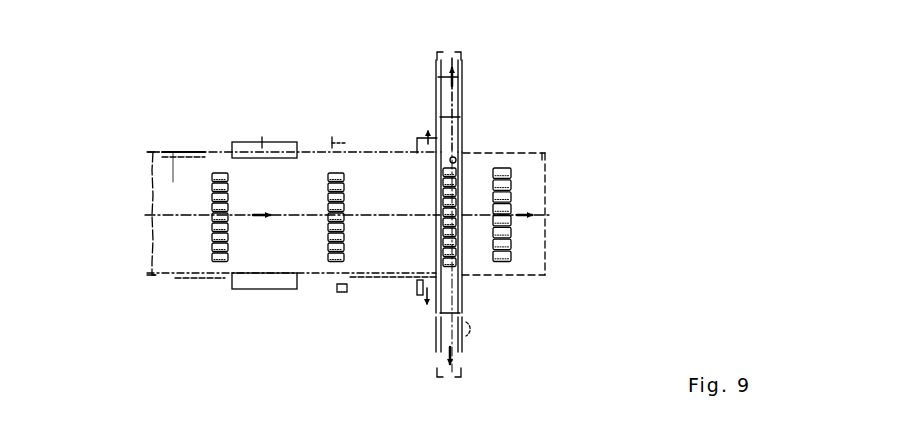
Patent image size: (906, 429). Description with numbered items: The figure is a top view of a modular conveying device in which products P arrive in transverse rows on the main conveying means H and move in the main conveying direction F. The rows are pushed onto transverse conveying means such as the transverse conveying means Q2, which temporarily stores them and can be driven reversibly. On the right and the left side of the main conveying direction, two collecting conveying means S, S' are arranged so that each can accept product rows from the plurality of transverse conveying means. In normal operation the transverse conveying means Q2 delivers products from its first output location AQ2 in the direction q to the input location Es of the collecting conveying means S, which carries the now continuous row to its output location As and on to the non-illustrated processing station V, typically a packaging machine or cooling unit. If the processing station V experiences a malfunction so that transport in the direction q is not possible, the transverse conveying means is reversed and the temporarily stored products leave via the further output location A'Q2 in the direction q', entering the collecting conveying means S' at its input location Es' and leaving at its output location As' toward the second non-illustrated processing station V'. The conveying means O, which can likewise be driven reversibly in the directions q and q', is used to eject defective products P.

The main conveying means H is at (187, 170).
The products P is at (220, 172).
The main conveying direction F is at (394, 202).
The processing station V is at (347, 237).
The processing station V' is at (447, 83).
The collecting conveying means S is at (411, 264).
The collecting conveying means S' is at (477, 102).
The input location of collecting conveying means S' Es' is at (418, 74).
The conveying direction q' is at (445, 105).
The output location of collecting conveying means S' As' is at (488, 122).
The further output location of transverse conveying means Q2 A'Q2 is at (498, 146).
The transverse conveying means Q2 is at (447, 163).
The conveying means O is at (420, 283).
The conveying direction q is at (428, 330).
The input location of collecting conveying means S Es is at (476, 300).
The first output location of transverse conveying means Q2 AQ2 is at (455, 269).
The output location of collecting conveying means S As is at (482, 340).